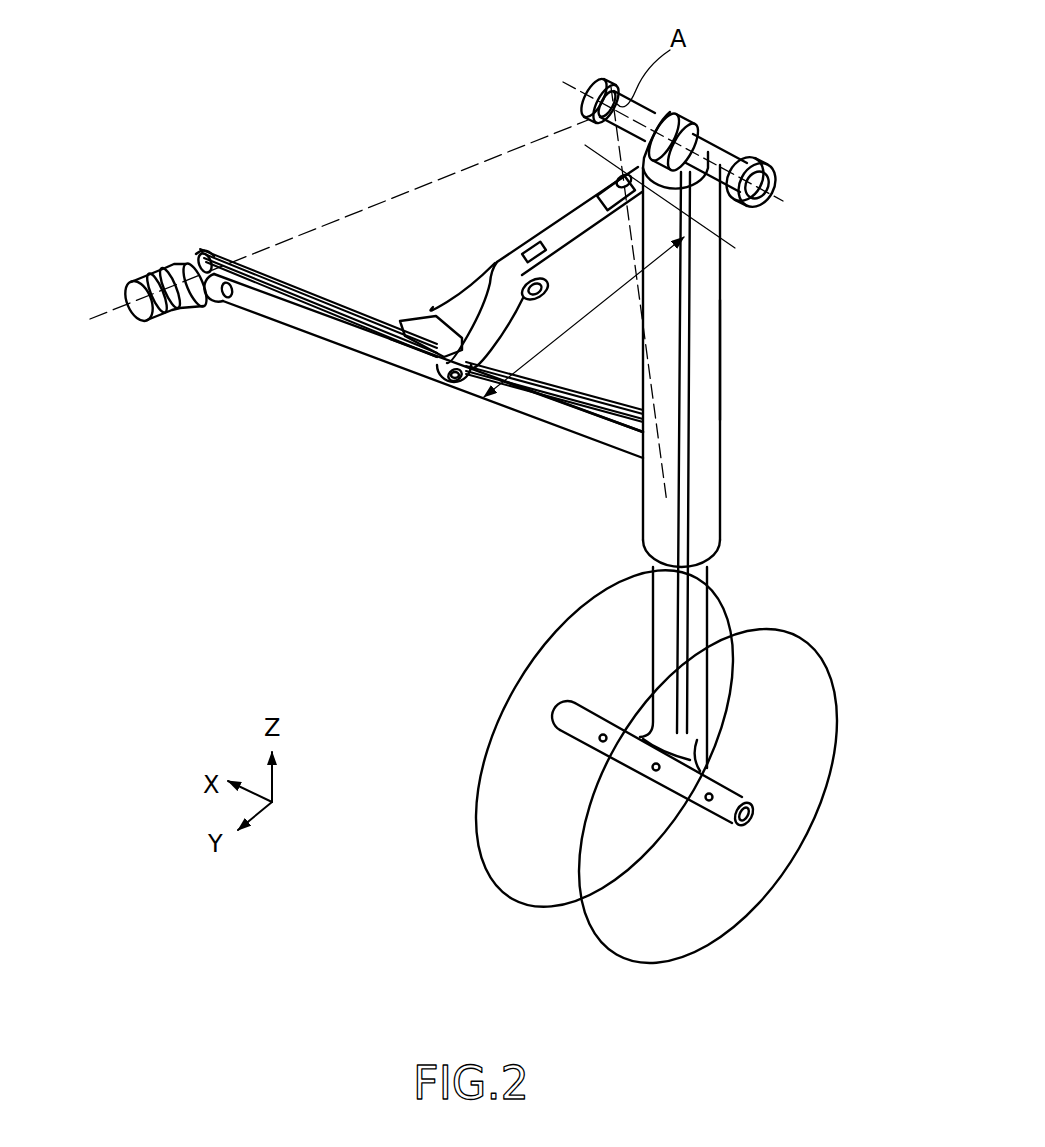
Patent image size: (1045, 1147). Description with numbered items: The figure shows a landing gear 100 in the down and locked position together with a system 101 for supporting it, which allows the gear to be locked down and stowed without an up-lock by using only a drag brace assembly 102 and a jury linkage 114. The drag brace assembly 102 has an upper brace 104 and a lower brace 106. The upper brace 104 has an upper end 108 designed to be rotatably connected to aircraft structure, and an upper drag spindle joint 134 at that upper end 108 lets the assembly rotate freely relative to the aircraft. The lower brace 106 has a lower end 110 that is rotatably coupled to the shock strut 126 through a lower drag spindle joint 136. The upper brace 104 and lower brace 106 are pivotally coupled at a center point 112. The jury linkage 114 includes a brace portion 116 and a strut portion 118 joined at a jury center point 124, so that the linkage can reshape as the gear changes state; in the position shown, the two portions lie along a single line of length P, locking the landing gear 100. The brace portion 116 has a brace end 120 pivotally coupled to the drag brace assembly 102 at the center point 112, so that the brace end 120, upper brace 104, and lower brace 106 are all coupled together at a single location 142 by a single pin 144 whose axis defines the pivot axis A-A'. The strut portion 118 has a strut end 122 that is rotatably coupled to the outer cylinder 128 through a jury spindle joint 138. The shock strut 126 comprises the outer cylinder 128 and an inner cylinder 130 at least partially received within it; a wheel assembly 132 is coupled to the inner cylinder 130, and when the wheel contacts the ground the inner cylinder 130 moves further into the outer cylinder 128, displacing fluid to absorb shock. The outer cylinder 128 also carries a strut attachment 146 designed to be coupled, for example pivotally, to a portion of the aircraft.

The landing gear 100 is at (802, 58).
The system 101 is at (824, 190).
The drag brace assembly 102 is at (358, 365).
The upper brace 104 is at (271, 320).
The lower brace 106 is at (577, 438).
The upper end 108 is at (193, 250).
The lower end 110 is at (638, 404).
The center point 112 is at (400, 352).
The jury linkage 114 is at (567, 226).
The brace portion 116 is at (467, 305).
The strut portion 118 is at (580, 228).
The brace end 120 is at (432, 316).
The strut end 122 is at (672, 172).
The jury center point 124 is at (554, 278).
The shock strut 126 is at (728, 337).
The outer cylinder 128 is at (724, 292).
The inner cylinder 130 is at (705, 570).
The wheel assembly 132 is at (834, 692).
The upper drag spindle joint 134 is at (130, 283).
The lower drag spindle joint 136 is at (672, 441).
The jury spindle joint 138 is at (645, 228).
The single location 142 is at (473, 363).
The single pin 144 is at (456, 390).
The strut attachment 146 is at (664, 98).